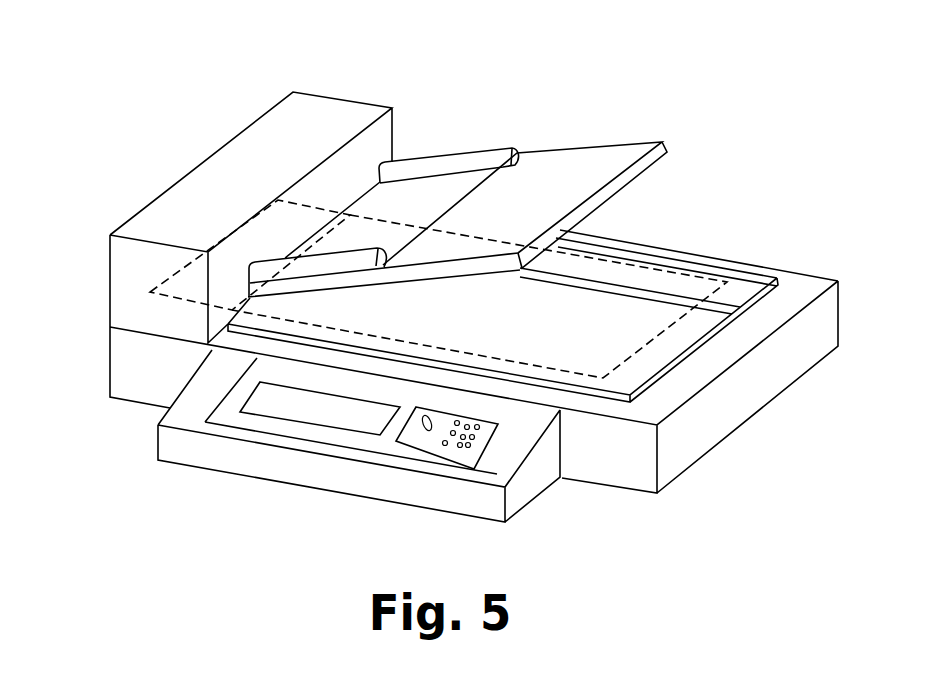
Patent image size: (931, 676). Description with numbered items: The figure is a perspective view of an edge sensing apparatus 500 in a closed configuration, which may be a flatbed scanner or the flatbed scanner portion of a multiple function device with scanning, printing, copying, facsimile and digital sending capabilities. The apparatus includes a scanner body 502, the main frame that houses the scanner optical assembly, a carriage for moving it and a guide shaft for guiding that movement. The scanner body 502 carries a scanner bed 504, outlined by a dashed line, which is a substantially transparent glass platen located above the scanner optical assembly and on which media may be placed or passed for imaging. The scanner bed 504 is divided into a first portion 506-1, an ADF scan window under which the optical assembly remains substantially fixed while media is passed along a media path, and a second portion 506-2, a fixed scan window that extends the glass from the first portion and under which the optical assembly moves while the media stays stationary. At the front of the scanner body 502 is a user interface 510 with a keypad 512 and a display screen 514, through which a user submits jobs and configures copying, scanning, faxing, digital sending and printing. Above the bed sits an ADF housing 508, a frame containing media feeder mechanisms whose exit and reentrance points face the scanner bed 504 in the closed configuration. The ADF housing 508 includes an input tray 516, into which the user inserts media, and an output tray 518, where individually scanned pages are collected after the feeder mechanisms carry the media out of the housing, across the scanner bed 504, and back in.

The edge sensing apparatus 500 is at (182, 79).
The scanner body 502 is at (760, 445).
The scanner bed 504 is at (574, 336).
The first portion 506-1 is at (168, 278).
The second portion 506-2 is at (680, 272).
The ADF housing 508 is at (327, 115).
The user interface 510 is at (310, 513).
The keypad 512 is at (398, 518).
The display screen 514 is at (228, 495).
The input tray 516 is at (554, 204).
The output tray 518 is at (457, 325).